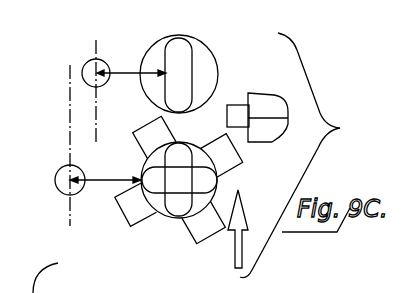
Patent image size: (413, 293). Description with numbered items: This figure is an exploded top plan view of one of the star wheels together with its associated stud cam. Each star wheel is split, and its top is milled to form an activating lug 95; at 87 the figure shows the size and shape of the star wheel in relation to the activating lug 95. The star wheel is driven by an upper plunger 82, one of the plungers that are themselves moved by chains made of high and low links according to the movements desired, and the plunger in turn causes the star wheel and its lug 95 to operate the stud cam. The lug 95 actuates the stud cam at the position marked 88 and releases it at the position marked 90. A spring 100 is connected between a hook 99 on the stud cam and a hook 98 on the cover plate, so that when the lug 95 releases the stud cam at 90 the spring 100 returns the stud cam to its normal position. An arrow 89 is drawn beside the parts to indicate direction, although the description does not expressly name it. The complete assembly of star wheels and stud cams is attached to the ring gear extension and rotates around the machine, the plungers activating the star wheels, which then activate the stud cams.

The release position 90 is at (127, 78).
The activating lug 95 is at (193, 83).
The upper plunger 82 is at (238, 104).
The actuating position 88 is at (97, 178).
The star wheel size and shape 87 is at (182, 230).
The direction arrow 89 is at (237, 255).
The hook on stud cam 99 is at (191, 282).
The spring 100 is at (151, 292).
The hook on cover plate 98 is at (50, 278).